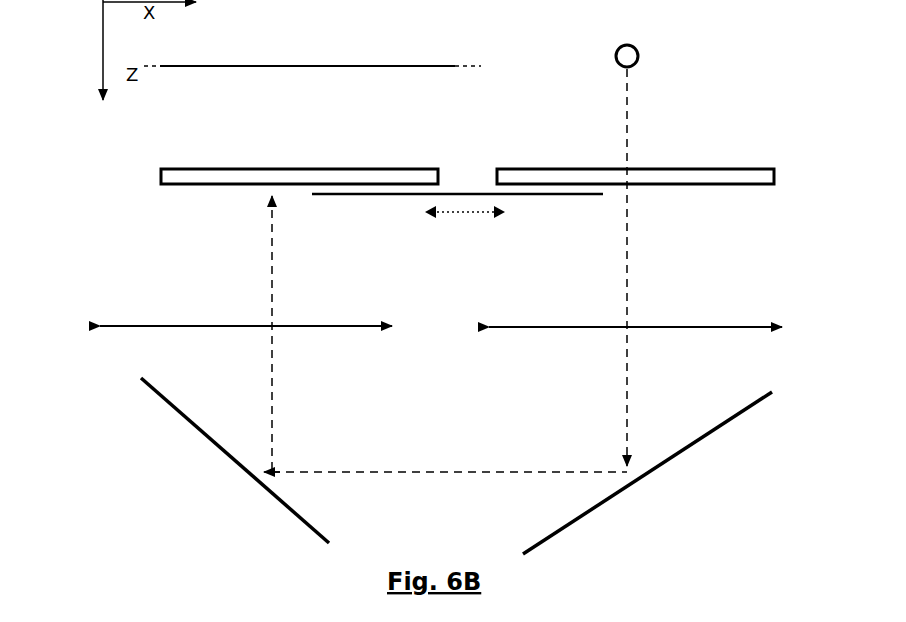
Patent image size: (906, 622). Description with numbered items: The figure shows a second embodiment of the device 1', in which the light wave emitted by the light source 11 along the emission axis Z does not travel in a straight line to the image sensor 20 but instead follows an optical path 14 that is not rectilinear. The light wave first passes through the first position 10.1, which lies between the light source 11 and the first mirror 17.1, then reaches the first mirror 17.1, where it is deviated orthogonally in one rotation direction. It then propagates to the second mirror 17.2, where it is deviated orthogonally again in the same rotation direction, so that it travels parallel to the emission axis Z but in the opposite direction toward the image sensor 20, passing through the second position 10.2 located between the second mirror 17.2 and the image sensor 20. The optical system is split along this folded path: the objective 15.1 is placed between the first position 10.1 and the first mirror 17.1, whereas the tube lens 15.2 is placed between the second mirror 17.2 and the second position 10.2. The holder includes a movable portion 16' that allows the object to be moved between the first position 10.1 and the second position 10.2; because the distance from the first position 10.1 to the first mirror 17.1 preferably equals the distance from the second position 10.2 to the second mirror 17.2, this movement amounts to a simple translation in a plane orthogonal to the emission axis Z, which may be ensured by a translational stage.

The device 1' is at (53, 76).
The image sensor 20 is at (320, 65).
The second position 10.2 is at (188, 166).
The first position 10.1 is at (493, 174).
The light source 11 is at (602, 58).
The movable portion 16' is at (496, 220).
The optical path 14 is at (259, 223).
The tube lens 15.2 is at (272, 330).
The objective 15.1 is at (578, 339).
The second mirror 17.2 is at (236, 497).
The first mirror 17.1 is at (618, 497).